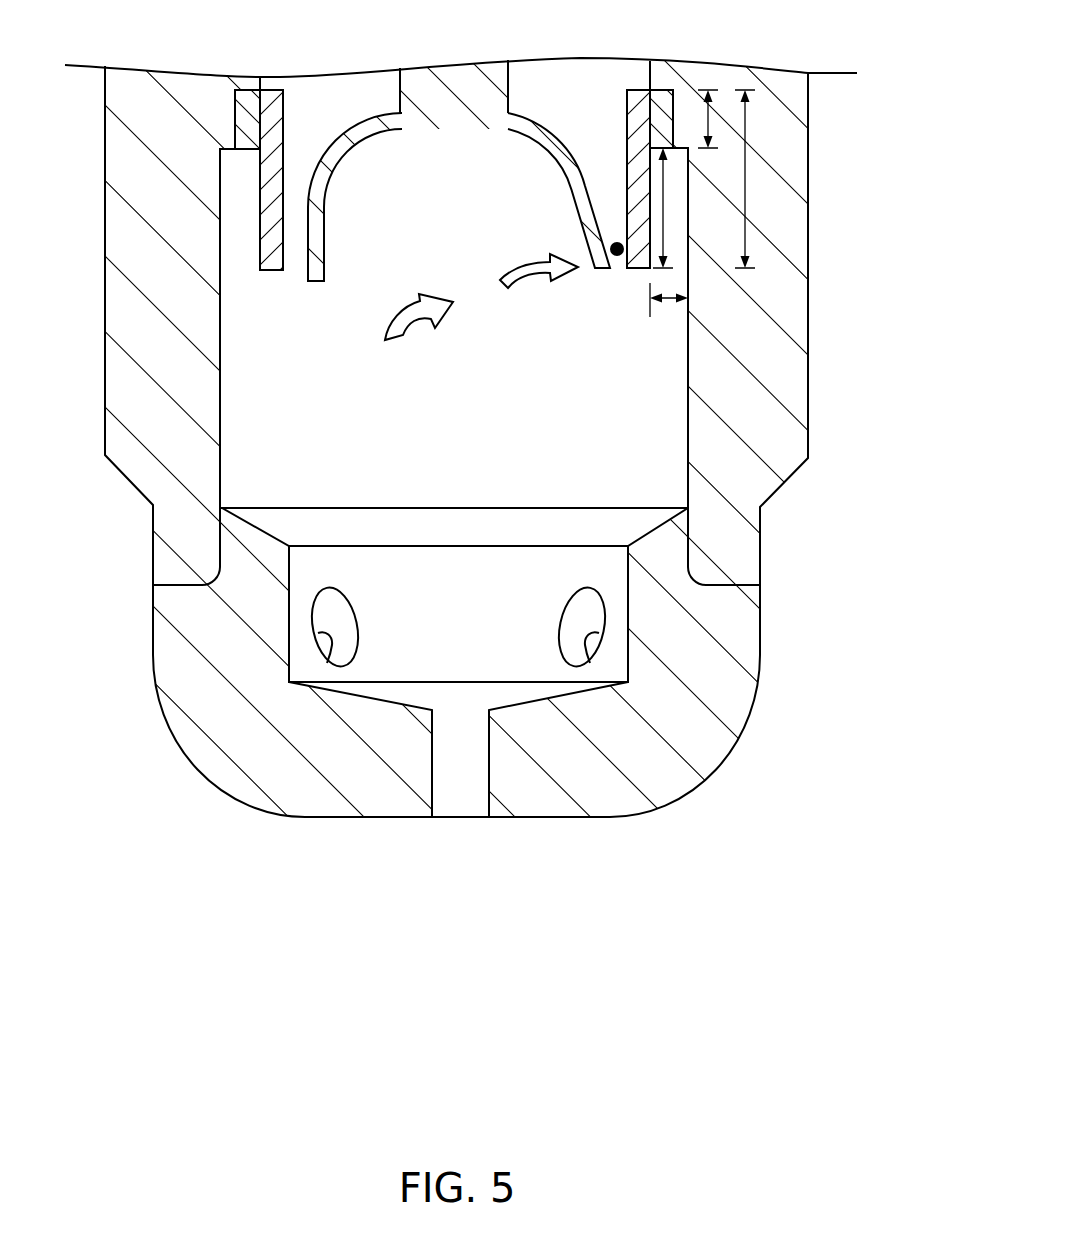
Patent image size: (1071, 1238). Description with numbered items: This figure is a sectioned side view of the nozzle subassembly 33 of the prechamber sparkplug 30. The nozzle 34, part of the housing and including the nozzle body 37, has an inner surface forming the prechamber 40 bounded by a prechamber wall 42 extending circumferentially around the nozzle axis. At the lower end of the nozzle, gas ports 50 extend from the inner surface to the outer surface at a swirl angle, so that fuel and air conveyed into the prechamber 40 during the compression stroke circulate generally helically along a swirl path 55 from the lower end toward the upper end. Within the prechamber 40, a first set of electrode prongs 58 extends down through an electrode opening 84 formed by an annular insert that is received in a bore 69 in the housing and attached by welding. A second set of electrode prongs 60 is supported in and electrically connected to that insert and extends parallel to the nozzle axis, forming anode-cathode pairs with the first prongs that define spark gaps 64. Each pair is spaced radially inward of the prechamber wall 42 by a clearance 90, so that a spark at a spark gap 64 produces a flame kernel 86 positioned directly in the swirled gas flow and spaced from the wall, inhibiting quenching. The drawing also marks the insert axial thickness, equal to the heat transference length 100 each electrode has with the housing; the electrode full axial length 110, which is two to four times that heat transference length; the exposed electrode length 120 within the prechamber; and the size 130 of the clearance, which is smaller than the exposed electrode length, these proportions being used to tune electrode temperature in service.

The prechamber sparkplug 30 is at (535, 619).
The nozzle subassembly 33 is at (874, 96).
The nozzle 34 is at (808, 300).
The nozzle body 37 is at (808, 371).
The prechamber 40 is at (454, 629).
The prechamber wall 42 is at (682, 388).
The gas port 50 is at (330, 653).
The swirl path 55 is at (408, 338).
The first set of electrode prongs 58 is at (327, 239).
The second set of electrode prongs 60 is at (258, 238).
The spark gap 64 is at (616, 289).
The bore 69 is at (240, 100).
The electrode opening 84 is at (284, 113).
The flame kernel 86 is at (611, 229).
The clearance 90 is at (240, 260).
The heat transference length 100 is at (697, 110).
The electrode full axial length 110 is at (748, 173).
The exposed electrode length 120 is at (668, 213).
The size of clearance 130 is at (668, 303).